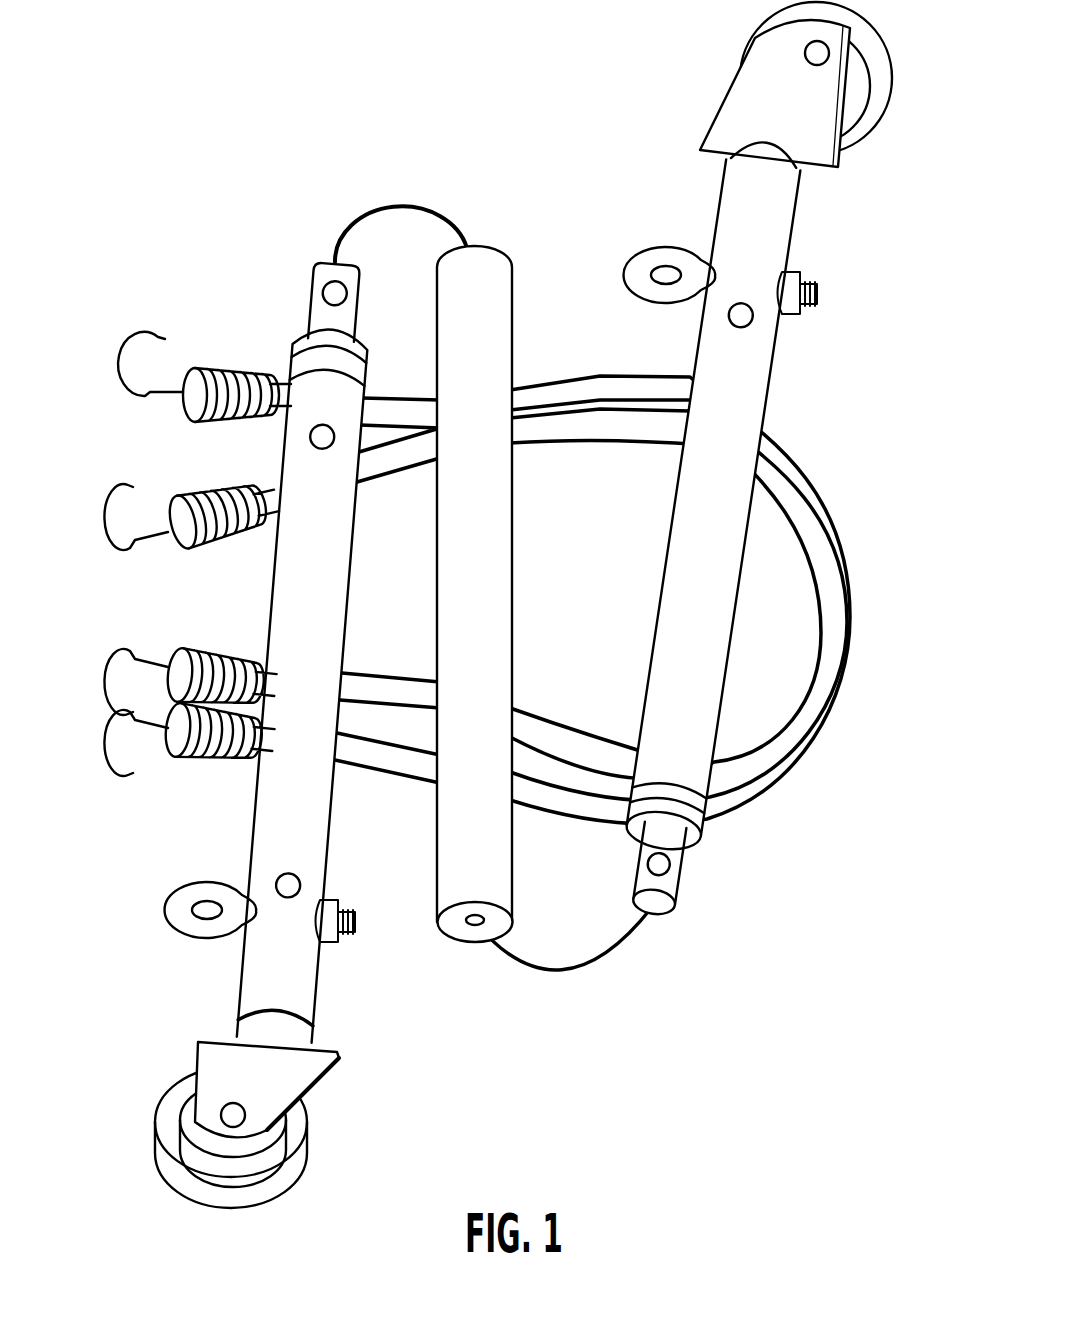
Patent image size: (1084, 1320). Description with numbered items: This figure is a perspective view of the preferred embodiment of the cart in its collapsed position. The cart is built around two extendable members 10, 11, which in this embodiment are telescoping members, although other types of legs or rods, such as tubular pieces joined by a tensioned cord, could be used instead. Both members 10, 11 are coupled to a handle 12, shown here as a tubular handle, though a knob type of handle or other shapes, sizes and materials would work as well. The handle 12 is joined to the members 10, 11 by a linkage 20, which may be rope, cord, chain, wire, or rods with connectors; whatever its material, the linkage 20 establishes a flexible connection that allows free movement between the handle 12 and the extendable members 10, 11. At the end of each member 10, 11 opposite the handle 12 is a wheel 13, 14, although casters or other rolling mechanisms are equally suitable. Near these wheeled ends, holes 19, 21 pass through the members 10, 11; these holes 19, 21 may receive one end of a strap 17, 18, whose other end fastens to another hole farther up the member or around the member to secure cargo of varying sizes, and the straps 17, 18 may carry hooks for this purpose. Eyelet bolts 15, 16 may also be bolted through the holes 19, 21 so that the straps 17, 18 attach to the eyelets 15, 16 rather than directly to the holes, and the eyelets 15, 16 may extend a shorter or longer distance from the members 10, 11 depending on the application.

The extendable member 10 is at (712, 627).
The extendable member 11 is at (280, 796).
The handle 12 is at (482, 247).
The wheel 13 is at (752, 48).
The wheel 14 is at (308, 1133).
The eyelet bolt 15 is at (680, 262).
The eyelet bolt 16 is at (207, 890).
The strap 17 is at (262, 378).
The strap 18 is at (255, 502).
The hole 19 is at (800, 298).
The linkage 20 is at (569, 968).
The hole 21 is at (352, 935).